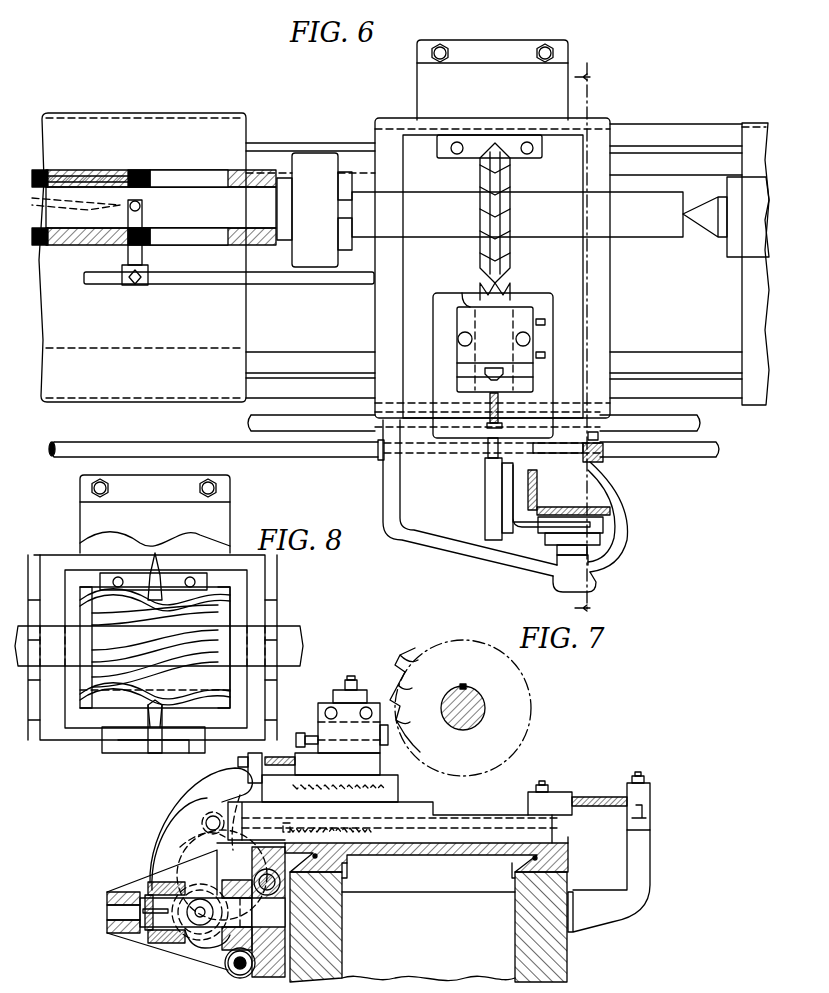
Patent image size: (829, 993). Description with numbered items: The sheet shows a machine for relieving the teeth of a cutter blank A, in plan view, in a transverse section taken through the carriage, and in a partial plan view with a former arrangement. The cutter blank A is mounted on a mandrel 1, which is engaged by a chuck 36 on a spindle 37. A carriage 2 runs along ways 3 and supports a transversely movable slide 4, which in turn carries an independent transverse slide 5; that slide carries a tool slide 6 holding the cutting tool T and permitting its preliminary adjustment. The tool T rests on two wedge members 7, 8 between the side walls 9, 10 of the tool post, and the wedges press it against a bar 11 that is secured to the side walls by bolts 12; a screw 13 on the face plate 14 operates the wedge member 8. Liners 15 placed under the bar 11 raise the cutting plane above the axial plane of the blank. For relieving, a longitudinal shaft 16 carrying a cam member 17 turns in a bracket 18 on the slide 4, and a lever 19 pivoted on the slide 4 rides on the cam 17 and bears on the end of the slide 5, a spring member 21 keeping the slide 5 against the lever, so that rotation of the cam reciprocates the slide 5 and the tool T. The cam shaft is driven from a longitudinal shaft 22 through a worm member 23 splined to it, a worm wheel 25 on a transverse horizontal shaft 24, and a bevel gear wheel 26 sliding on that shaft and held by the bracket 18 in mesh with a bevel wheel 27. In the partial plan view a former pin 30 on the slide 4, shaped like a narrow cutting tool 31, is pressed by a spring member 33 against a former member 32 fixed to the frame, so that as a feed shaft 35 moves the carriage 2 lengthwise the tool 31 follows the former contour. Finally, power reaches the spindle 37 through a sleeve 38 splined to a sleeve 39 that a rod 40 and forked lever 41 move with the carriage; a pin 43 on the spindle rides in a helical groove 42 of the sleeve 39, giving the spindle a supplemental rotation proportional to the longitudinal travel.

In FIG. 6, the mandrel 1 is at (650, 230).
In FIG. 7, the mandrel 1 is at (485, 708).
In FIG. 6, the carriage 2 is at (619, 328).
In FIG. 7, the carriage 2 is at (450, 855).
In FIG. 7, the ways 3 is at (530, 878).
In FIG. 6, the transversely movable slide 4 is at (585, 305).
In FIG. 7, the transversely movable slide 4 is at (425, 806).
In FIG. 6, the transverse slide 5 is at (553, 375).
In FIG. 7, the transverse slide 5 is at (398, 790).
In FIG. 6, the tool slide 6 is at (525, 308).
In FIG. 7, the tool slide 6 is at (368, 762).
In FIG. 6, the wedge member 7 is at (589, 340).
In FIG. 7, the wedge member 7 is at (318, 725).
In FIG. 7, the wedge member 8 is at (388, 735).
In FIG. 6, the side wall 9 is at (460, 300).
In FIG. 6, the side wall 10 is at (540, 318).
In FIG. 7, the bar 11 is at (333, 692).
In FIG. 6, the bolts 12 is at (458, 338).
In FIG. 7, the bolts 12 is at (350, 678).
In FIG. 7, the screw 13 is at (296, 740).
In FIG. 7, the face plate 14 is at (326, 708).
In FIG. 7, the liners 15 is at (368, 707).
In FIG. 6, the longitudinal shaft 16 is at (485, 485).
In FIG. 7, the longitudinal shaft 16 is at (160, 882).
In FIG. 6, the cam member 17 is at (502, 520).
In FIG. 7, the cam member 17 is at (185, 948).
In FIG. 6, the bracket 18 is at (520, 530).
In FIG. 7, the bracket 18 is at (212, 840).
In FIG. 6, the lever 19 is at (490, 538).
In FIG. 7, the lever 19 is at (213, 795).
In FIG. 6, the spring member 21 is at (565, 470).
In FIG. 7, the spring member 21 is at (240, 778).
In FIG. 6, the longitudinal shaft 22 is at (700, 457).
In FIG. 7, the longitudinal shaft 22 is at (230, 962).
In FIG. 6, the worm member 23 is at (598, 438).
In FIG. 7, the worm member 23 is at (228, 972).
In FIG. 7, the transverse horizontal shaft 24 is at (270, 918).
In FIG. 7, the worm wheel 25 is at (270, 945).
In FIG. 6, the bevel gear wheel 26 is at (612, 512).
In FIG. 7, the bevel gear wheel 26 is at (172, 880).
In FIG. 6, the bevel wheel 27 is at (540, 487).
In FIG. 7, the bevel wheel 27 is at (188, 900).
In FIG. 8, the former pin 30 is at (158, 560).
In FIG. 7, the former pin 30 is at (560, 792).
In FIG. 8, the narrow cutting tool 31 is at (150, 718).
In FIG. 8, the former member 32 is at (225, 515).
In FIG. 7, the former member 32 is at (622, 790).
In FIG. 7, the spring member 33 is at (345, 828).
In FIG. 6, the feed shaft 35 is at (245, 422).
In FIG. 7, the feed shaft 35 is at (258, 872).
In FIG. 6, the chuck 36 is at (330, 262).
In FIG. 6, the spindle 37 is at (200, 195).
In FIG. 6, the sleeve 38 is at (45, 170).
In FIG. 6, the sleeve 39 is at (142, 178).
In FIG. 6, the rod 40 is at (214, 280).
In FIG. 6, the forked lever 41 is at (144, 258).
In FIG. 6, the helical groove 42 is at (90, 198).
In FIG. 6, the pin 43 is at (55, 182).
In FIG. 6, the cutter blank A is at (512, 180).
In FIG. 7, the cutter blank A is at (525, 685).
In FIG. 6, the cutting tool T is at (505, 285).
In FIG. 7, the cutting tool T is at (405, 670).